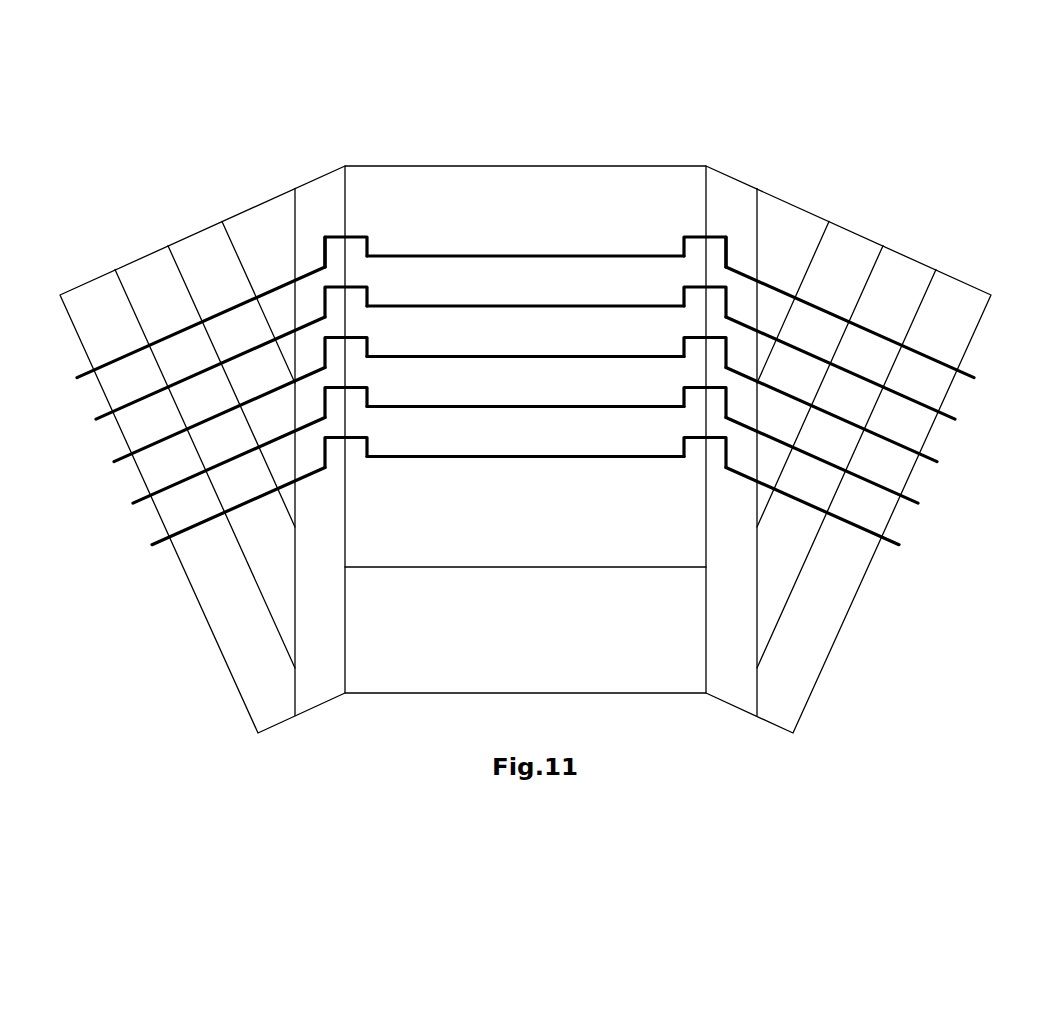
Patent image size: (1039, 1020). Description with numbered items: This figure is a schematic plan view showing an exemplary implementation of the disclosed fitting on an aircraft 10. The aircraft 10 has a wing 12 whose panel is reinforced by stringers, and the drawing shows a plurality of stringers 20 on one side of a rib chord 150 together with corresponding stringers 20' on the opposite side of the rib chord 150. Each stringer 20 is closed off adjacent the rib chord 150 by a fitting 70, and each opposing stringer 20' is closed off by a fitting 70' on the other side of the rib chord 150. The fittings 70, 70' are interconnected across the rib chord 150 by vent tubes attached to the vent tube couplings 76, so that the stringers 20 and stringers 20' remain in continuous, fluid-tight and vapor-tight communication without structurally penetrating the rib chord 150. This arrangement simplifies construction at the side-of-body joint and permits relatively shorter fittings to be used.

The aircraft 10 is at (530, 417).
The wing 12 is at (150, 275).
The stringer 20 is at (525, 356).
The stringer 20' is at (531, 406).
The fitting 70 is at (525, 331).
The fitting 70' is at (530, 345).
The vent tube coupling 76 is at (330, 235).
The rib chord 150 is at (346, 202).